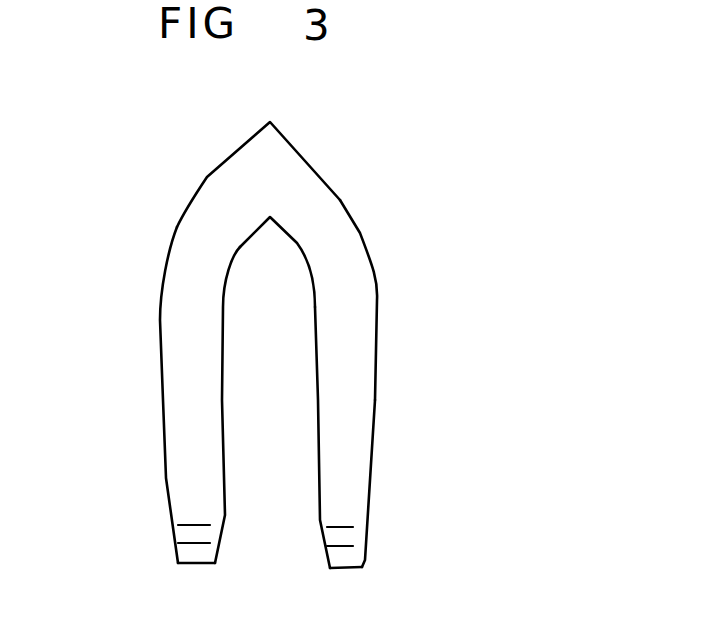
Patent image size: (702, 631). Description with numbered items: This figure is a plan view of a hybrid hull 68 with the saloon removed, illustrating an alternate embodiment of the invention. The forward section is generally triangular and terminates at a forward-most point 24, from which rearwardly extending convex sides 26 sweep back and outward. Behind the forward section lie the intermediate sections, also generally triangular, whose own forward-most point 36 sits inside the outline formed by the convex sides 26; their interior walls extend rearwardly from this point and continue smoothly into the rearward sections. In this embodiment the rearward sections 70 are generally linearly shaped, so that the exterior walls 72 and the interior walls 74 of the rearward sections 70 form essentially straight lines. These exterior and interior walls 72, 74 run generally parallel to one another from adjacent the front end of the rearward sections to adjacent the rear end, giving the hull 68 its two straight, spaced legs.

The forward-most point 24 is at (268, 121).
The convex sides 26 is at (303, 152).
The forward-most point 36 is at (272, 217).
The hybrid hull 68 is at (430, 277).
The rearward sections 70 is at (183, 455).
The exterior walls 72 is at (160, 395).
The interior walls 74 is at (222, 390).